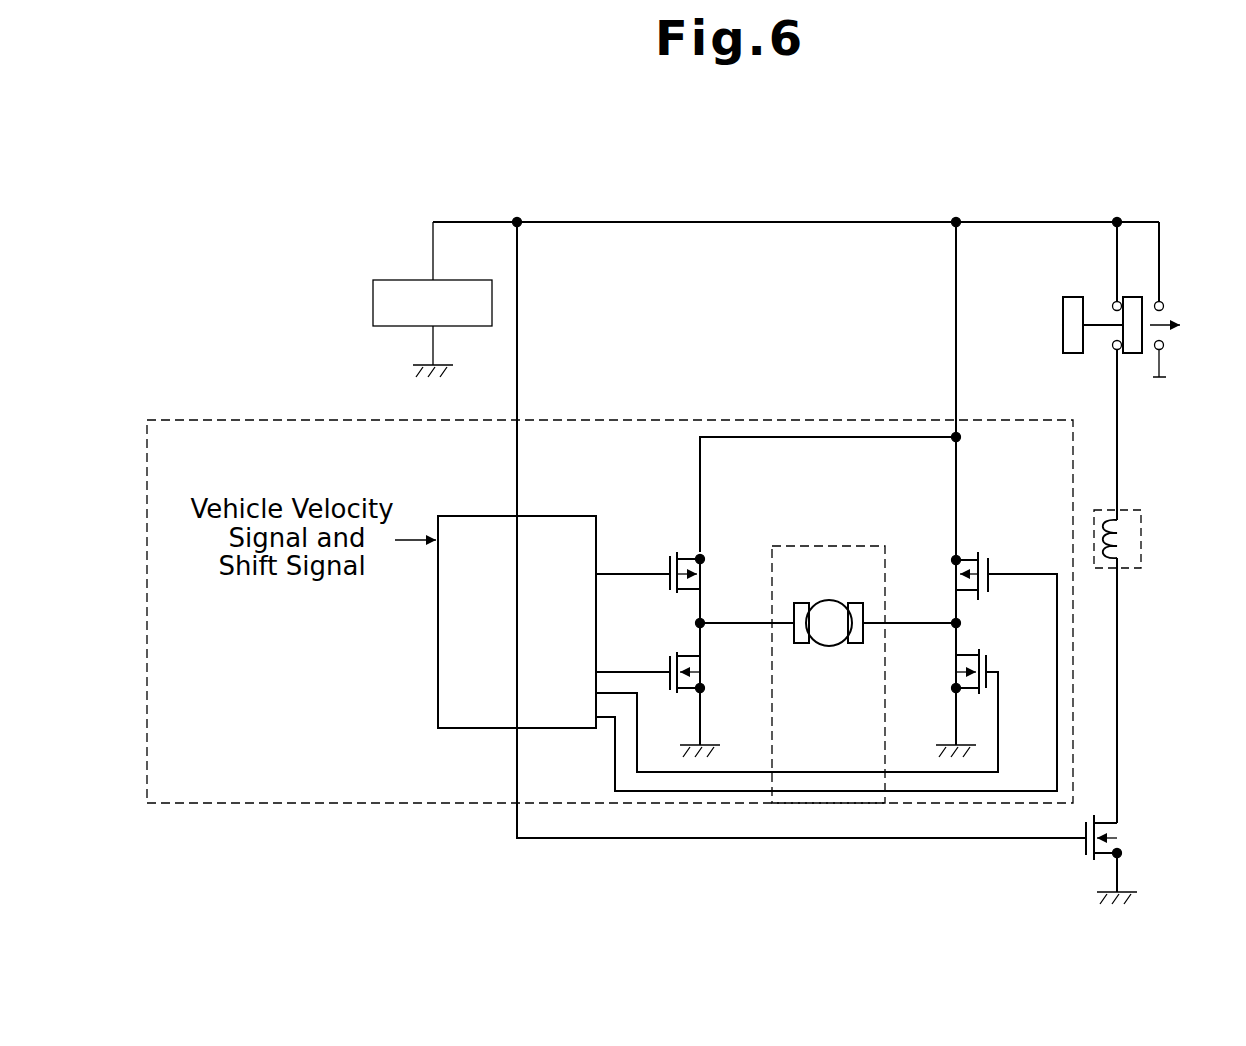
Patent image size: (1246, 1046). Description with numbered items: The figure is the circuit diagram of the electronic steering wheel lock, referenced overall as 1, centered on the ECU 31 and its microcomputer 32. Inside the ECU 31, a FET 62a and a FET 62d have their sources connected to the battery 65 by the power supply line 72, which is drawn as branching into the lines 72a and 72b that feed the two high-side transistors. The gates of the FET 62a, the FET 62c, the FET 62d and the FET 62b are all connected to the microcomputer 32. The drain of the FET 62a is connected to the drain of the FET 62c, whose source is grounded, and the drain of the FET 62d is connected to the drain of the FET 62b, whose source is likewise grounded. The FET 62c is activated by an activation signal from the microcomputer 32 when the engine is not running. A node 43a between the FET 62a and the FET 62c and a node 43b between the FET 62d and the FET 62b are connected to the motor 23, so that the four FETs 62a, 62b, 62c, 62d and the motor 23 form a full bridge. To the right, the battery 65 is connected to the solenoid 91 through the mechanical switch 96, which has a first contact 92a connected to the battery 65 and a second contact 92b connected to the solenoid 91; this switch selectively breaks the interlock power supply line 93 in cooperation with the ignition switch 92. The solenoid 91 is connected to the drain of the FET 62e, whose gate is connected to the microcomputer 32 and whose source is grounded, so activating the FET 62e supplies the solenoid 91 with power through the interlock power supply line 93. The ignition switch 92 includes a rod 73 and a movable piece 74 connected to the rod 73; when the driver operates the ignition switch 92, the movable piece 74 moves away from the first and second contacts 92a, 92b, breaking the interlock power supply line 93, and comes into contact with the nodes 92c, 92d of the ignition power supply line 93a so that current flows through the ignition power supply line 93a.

The power window apparatus 1 is at (1172, 178).
The battery 65 is at (448, 280).
The ECU 31 is at (872, 416).
The microcomputer 32 is at (498, 731).
The motor 23 is at (822, 606).
The node 43a is at (704, 627).
The node 43b is at (952, 627).
The FET 62a is at (670, 556).
The FET 62b is at (1007, 645).
The FET 62c is at (664, 688).
The FET 62d is at (990, 572).
The FET 62e is at (1082, 846).
The power supply line 72 is at (958, 370).
The power supply branch line 72a is at (700, 452).
The power supply branch line 72b is at (956, 458).
The rod 73 is at (1096, 320).
The movable piece 74 is at (1141, 299).
The solenoid 91 is at (1143, 527).
The ignition switch 92 is at (1077, 322).
The first contact 92a is at (1115, 300).
The second contact 92b is at (1120, 350).
The node 92c is at (1165, 305).
The node 92d is at (1163, 349).
The interlock power supply line 93 is at (1119, 478).
The ignition power supply line 93a is at (1161, 243).
The mechanical switch 96 is at (1104, 362).